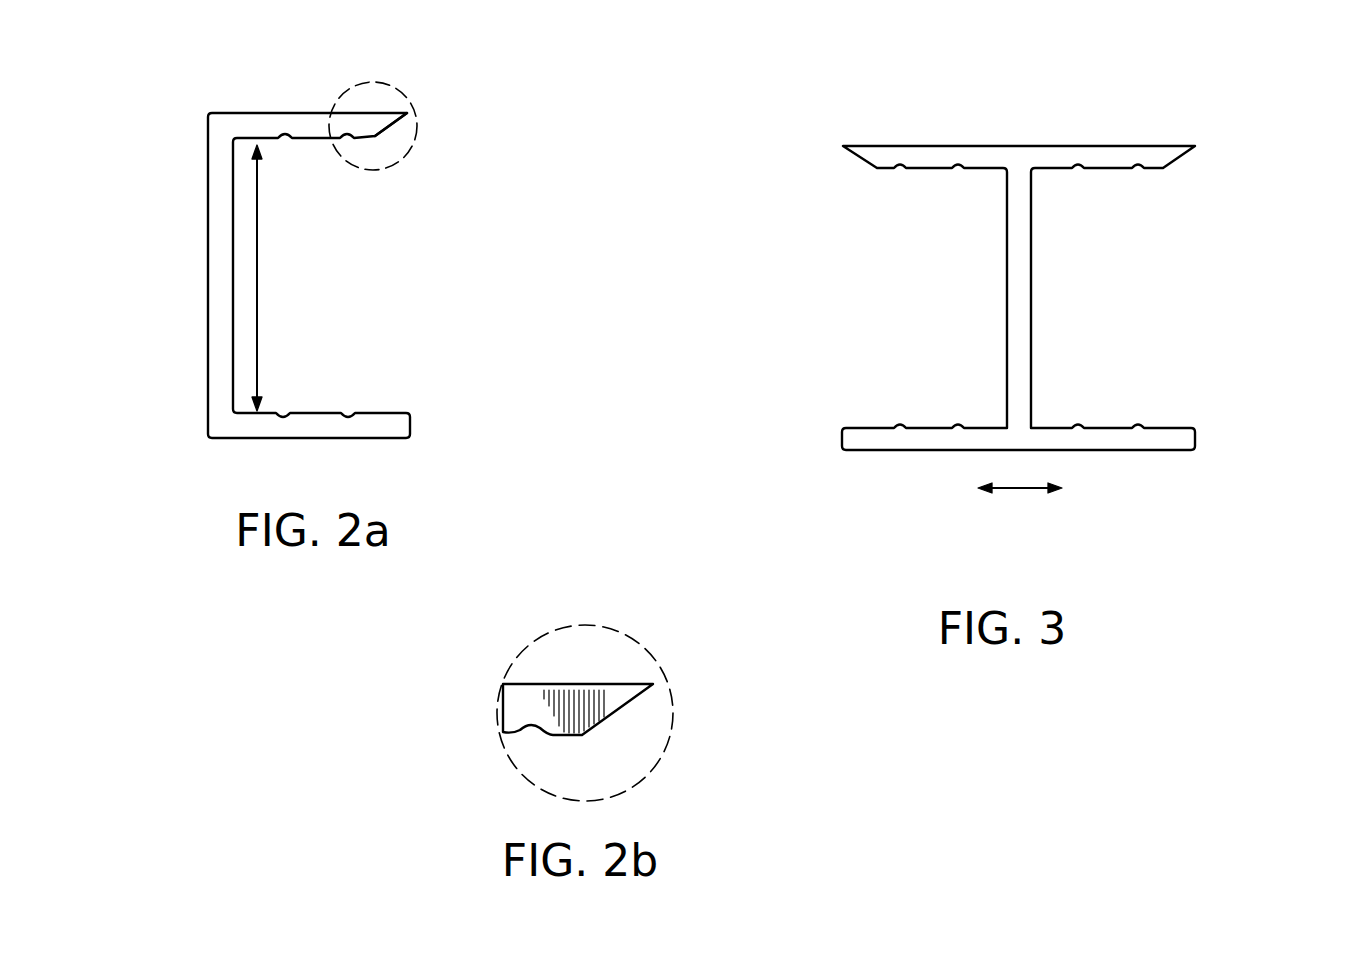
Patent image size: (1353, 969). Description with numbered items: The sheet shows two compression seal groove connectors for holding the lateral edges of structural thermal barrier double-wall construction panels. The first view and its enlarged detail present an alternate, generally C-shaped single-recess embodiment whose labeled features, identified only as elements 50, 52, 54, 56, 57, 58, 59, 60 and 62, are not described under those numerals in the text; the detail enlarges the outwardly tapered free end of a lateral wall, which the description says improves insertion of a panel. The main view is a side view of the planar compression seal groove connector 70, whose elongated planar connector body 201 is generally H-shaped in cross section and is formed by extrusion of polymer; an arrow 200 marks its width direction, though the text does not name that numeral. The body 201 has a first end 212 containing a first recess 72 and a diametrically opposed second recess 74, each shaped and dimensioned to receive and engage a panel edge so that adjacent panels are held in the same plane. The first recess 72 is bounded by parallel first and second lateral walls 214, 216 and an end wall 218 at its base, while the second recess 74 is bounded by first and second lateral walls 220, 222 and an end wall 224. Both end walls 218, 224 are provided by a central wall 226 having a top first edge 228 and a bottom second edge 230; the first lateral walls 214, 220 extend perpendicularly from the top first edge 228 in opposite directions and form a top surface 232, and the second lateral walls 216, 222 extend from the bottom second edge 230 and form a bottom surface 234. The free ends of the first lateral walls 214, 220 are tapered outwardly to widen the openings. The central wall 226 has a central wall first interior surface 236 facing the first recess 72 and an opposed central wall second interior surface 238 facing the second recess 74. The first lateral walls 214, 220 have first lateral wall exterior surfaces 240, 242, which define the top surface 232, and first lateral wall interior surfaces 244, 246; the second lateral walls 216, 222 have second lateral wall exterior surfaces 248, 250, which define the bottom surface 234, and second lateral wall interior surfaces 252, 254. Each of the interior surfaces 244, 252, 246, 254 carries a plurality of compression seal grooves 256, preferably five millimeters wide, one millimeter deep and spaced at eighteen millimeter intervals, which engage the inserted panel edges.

In FIG. 2a, the channel member 50 is at (186, 378).
In FIG. 2a, the channel body 52 is at (376, 302).
In FIG. 2a, the height dimension 54 is at (257, 272).
In FIG. 2a, the upper ridge 56 is at (285, 140).
In FIG. 2a, the upper ridge 57 is at (347, 140).
In FIG. 2b, the upper ridge 57 is at (532, 728).
In FIG. 2a, the lower ridge 58 is at (283, 411).
In FIG. 2a, the lower ridge 59 is at (348, 411).
In FIG. 2a, the detail region 60 is at (407, 97).
In FIG. 2b, the detail region 60 is at (545, 636).
In FIG. 2a, the chamfered lip 62 is at (392, 128).
In FIG. 2b, the chamfered lip 62 is at (615, 713).
In FIG. 3, the planar compression seal groove connector 70 is at (1074, 104).
In FIG. 3, the first recess 72 is at (787, 294).
In FIG. 3, the second recess 74 is at (1194, 285).
In FIG. 3, the width dimension 200 is at (1020, 492).
In FIG. 3, the planar connector body 201 is at (1145, 146).
In FIG. 3, the first end 212 is at (838, 118).
In FIG. 3, the first lateral wall of first recess 214 is at (989, 128).
In FIG. 3, the second lateral wall of first recess 216 is at (898, 452).
In FIG. 3, the end wall of first recess 218 is at (1007, 245).
In FIG. 3, the first lateral wall of second recess 220 is at (1105, 146).
In FIG. 3, the second lateral wall of second recess 222 is at (1122, 452).
In FIG. 3, the end wall of second recess 224 is at (1032, 348).
In FIG. 3, the central wall 226 is at (1020, 262).
In FIG. 3, the top first edge 228 is at (1036, 172).
In FIG. 3, the bottom second edge 230 is at (1003, 425).
In FIG. 3, the top surface 232 is at (1025, 129).
In FIG. 3, the bottom surface 234 is at (931, 465).
In FIG. 3, the central wall first interior surface 236 is at (1007, 282).
In FIG. 3, the central wall second interior surface 238 is at (1032, 304).
In FIG. 3, the first lateral wall exterior surface 240 is at (902, 146).
In FIG. 3, the first lateral wall exterior surface 242 is at (1178, 146).
In FIG. 3, the first lateral wall interior surface 244 is at (928, 170).
In FIG. 3, the first lateral wall interior surface 246 is at (1112, 170).
In FIG. 3, the second lateral wall exterior surface 248 is at (858, 450).
In FIG. 3, the second lateral wall exterior surface 250 is at (1172, 452).
In FIG. 3, the second lateral wall interior surface 252 is at (855, 428).
In FIG. 3, the second lateral wall interior surface 254 is at (1110, 427).
In FIG. 3, the compression seal grooves 256 is at (900, 170).